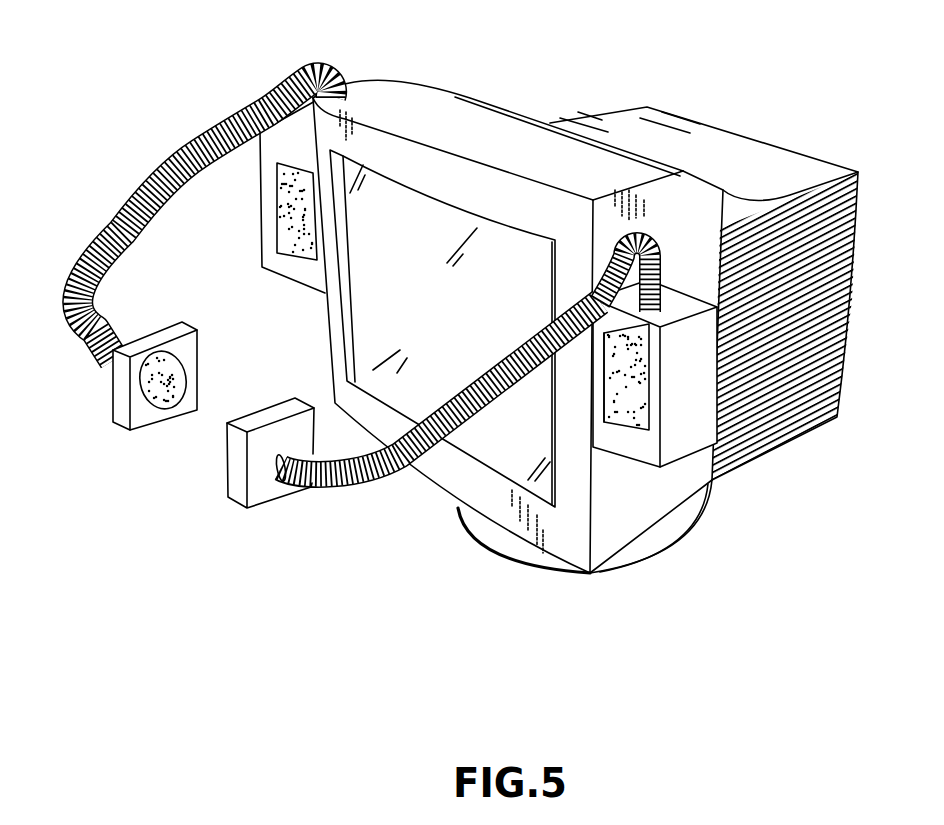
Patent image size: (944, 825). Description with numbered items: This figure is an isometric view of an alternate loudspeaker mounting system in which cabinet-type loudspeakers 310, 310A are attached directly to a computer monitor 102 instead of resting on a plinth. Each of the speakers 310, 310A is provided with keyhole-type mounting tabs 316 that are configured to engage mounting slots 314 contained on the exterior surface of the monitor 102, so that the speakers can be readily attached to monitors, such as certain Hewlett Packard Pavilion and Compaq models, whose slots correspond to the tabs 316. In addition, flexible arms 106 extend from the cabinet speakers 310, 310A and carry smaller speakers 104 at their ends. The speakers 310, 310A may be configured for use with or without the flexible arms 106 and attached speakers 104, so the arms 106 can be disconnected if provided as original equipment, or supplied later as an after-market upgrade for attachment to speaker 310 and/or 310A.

The monitor 102 is at (472, 347).
The speakers 104 is at (153, 423).
The flexible arms 106 is at (210, 140).
The loudspeaker 310 is at (260, 200).
The loudspeaker 310A is at (685, 445).
The mounting slots 314 is at (628, 266).
The mounting tabs 316 is at (591, 336).